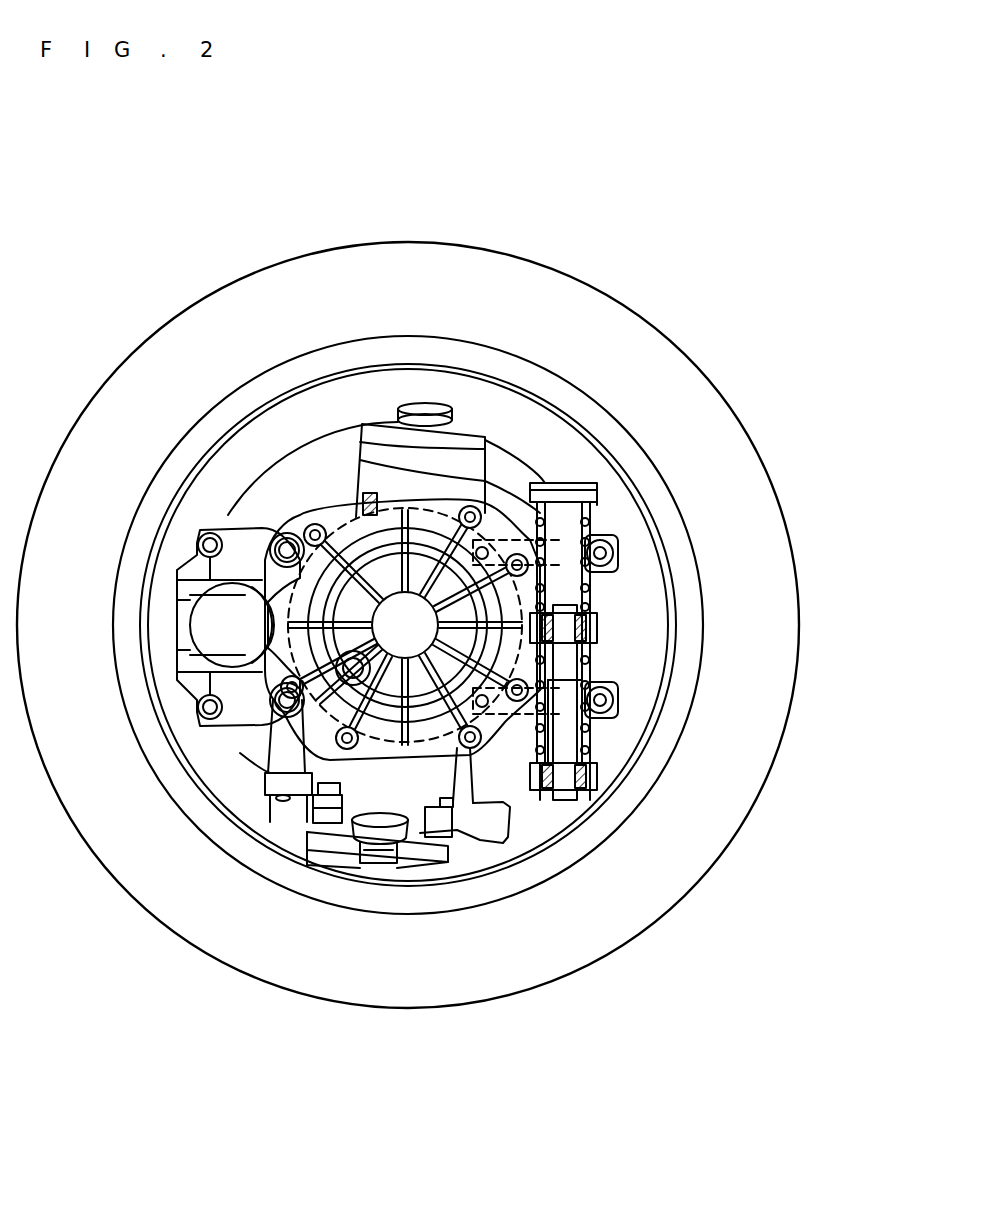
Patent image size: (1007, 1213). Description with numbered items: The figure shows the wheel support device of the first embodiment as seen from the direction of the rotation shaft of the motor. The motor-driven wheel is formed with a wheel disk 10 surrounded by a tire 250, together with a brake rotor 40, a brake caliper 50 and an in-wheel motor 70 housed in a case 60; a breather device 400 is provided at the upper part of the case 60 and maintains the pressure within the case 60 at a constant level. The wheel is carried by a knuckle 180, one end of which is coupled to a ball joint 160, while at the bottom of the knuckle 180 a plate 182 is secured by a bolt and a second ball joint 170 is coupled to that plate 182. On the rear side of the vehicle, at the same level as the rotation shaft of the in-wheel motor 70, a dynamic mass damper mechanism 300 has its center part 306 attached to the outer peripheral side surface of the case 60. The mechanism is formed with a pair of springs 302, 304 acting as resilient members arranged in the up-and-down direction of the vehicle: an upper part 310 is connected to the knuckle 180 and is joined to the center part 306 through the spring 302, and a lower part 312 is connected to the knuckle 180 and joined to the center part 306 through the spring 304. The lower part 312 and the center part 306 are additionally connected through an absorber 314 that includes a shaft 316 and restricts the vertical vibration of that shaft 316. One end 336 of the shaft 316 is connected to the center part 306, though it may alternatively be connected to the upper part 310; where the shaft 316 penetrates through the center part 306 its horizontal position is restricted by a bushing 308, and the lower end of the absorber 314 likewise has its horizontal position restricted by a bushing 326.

The wheel disk 10 is at (547, 385).
The tire 250 is at (428, 270).
The breather device 400 is at (350, 517).
The brake rotor 40 is at (282, 487).
The brake caliper 50 is at (244, 537).
The case 60 is at (347, 520).
The in-wheel motor 70 is at (390, 758).
The ball joint 160 is at (455, 417).
The ball joint 170 is at (393, 827).
The knuckle 180 is at (377, 447).
The plate 182 is at (330, 842).
The dynamic mass damper mechanism 300 is at (598, 662).
The spring 302 is at (598, 597).
The spring 304 is at (583, 737).
The center part 306 is at (597, 628).
The bushing 308 is at (597, 642).
The upper part 310 is at (593, 483).
The lower part 312 is at (597, 793).
The absorber 314 is at (590, 747).
The shaft 316 is at (610, 683).
The bushing 326 is at (548, 805).
The end 336 is at (597, 505).